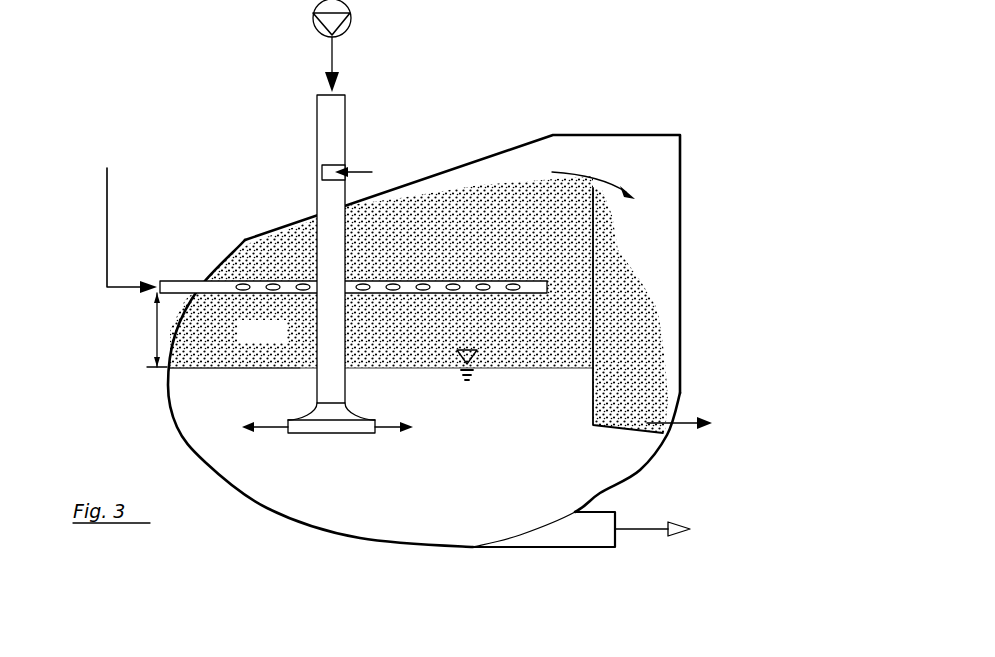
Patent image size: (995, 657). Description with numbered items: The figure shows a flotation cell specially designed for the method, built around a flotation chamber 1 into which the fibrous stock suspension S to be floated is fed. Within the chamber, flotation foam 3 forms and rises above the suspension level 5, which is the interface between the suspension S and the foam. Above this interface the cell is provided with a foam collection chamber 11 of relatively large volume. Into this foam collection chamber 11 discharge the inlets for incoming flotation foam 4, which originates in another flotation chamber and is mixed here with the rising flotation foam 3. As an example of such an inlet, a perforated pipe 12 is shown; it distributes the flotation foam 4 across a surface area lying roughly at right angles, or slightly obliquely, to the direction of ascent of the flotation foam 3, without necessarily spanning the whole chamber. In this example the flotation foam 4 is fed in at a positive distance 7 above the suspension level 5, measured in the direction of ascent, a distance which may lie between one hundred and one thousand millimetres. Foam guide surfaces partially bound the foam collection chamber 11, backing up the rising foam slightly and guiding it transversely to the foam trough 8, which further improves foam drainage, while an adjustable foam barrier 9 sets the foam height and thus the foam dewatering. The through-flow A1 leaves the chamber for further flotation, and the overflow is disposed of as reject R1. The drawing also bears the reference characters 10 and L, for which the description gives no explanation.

The flotation chamber 1 is at (283, 502).
The flotation foam 3 is at (262, 331).
The flotation foam 4 is at (110, 180).
The suspension level 5 is at (243, 370).
The distance 7 is at (155, 338).
The foam trough 8 is at (592, 428).
The foam barrier 9 is at (612, 262).
The distributor tube 10 is at (350, 106).
The foam collection chamber 11 is at (277, 224).
The perforated pipe 12 is at (184, 280).
The fibrous stock suspension S is at (326, 72).
The level L is at (368, 163).
The reject R1 is at (695, 435).
The through-flow A1 is at (670, 537).